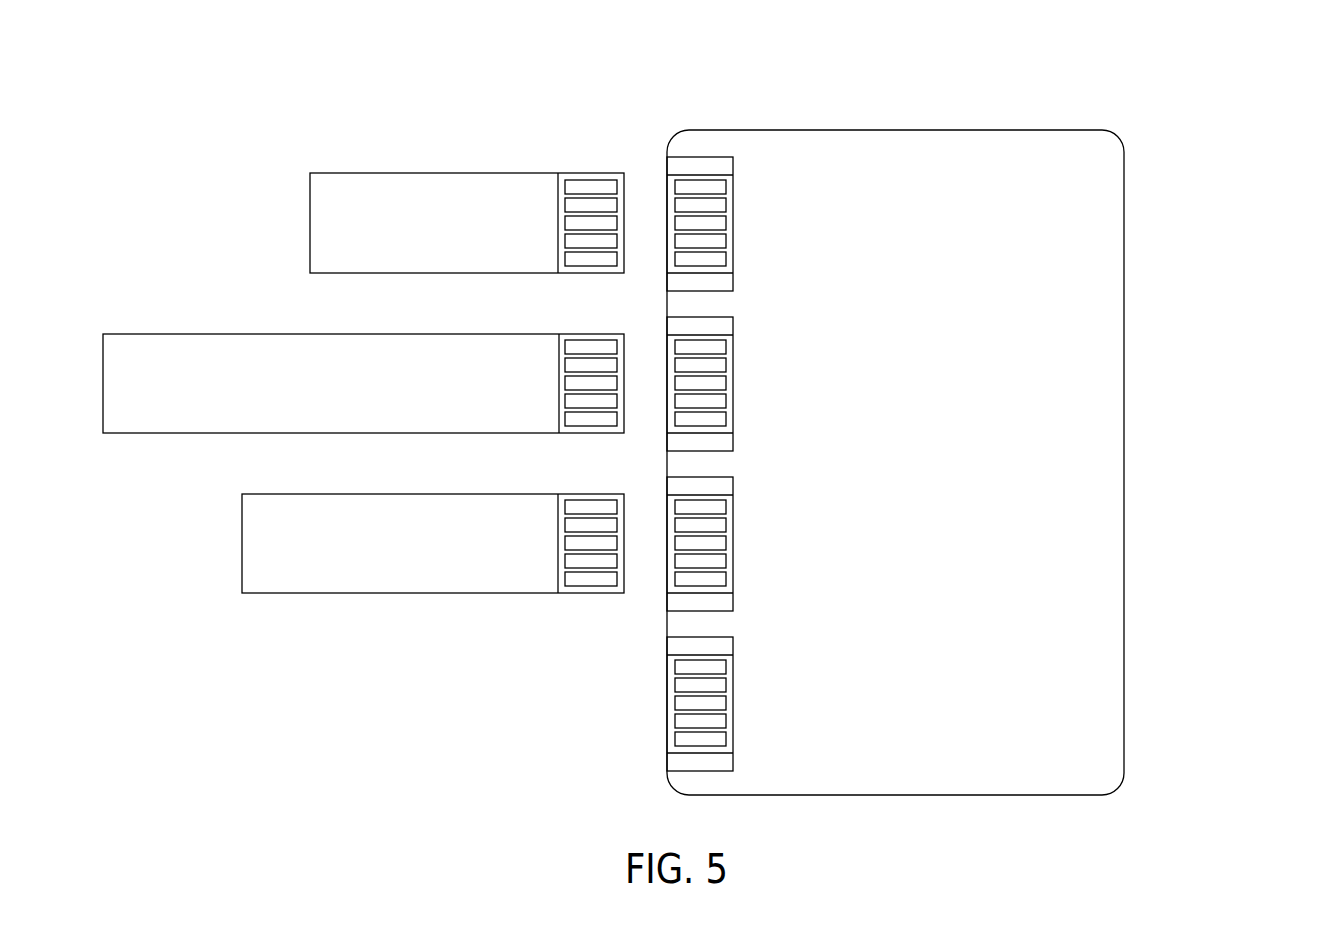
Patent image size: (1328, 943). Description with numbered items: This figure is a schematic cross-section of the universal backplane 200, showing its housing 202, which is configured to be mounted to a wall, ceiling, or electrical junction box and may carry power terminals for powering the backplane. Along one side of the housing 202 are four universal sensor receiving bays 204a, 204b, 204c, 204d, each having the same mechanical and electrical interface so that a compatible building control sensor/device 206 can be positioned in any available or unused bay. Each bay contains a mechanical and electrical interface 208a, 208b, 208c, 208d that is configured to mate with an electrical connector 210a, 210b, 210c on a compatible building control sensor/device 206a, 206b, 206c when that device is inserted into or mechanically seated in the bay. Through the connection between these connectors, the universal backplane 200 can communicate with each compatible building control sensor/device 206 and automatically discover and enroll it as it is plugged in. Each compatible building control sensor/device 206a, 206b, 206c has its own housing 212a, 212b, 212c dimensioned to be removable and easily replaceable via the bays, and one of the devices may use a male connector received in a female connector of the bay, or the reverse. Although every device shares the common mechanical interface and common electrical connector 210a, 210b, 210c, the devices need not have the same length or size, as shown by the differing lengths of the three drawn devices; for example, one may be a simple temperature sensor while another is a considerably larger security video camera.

The universal backplane 200 is at (1217, 117).
The housing 202 is at (1125, 465).
The universal sensor receiving bay 204a is at (733, 164).
The universal sensor receiving bay 204b is at (733, 324).
The universal sensor receiving bay 204c is at (733, 484).
The universal sensor receiving bay 204d is at (733, 644).
The compatible building control sensor/device 206 is at (853, 250).
The compatible building control sensor/device 206a is at (468, 173).
The compatible building control sensor/device 206b is at (331, 334).
The compatible building control sensor/device 206c is at (468, 494).
The mechanical and electrical interface 208a is at (726, 223).
The mechanical and electrical interface 208b is at (726, 383).
The mechanical and electrical interface 208c is at (726, 543).
The mechanical and electrical interface 208d is at (726, 703).
The electrical connector 210a is at (590, 180).
The electrical connector 210b is at (590, 340).
The electrical connector 210c is at (590, 500).
The housing 212a is at (327, 173).
The housing 212b is at (190, 334).
The housing 212c is at (328, 494).